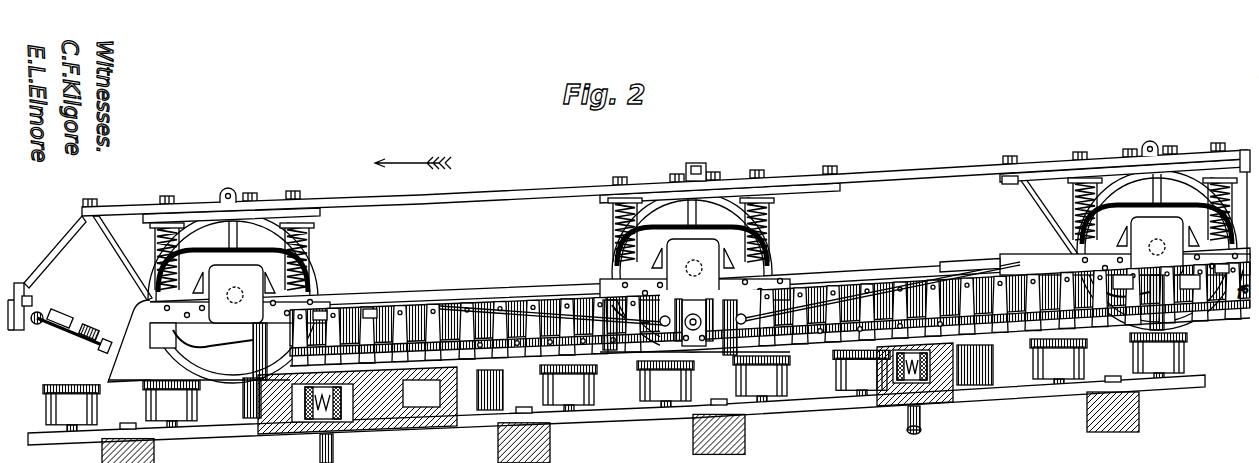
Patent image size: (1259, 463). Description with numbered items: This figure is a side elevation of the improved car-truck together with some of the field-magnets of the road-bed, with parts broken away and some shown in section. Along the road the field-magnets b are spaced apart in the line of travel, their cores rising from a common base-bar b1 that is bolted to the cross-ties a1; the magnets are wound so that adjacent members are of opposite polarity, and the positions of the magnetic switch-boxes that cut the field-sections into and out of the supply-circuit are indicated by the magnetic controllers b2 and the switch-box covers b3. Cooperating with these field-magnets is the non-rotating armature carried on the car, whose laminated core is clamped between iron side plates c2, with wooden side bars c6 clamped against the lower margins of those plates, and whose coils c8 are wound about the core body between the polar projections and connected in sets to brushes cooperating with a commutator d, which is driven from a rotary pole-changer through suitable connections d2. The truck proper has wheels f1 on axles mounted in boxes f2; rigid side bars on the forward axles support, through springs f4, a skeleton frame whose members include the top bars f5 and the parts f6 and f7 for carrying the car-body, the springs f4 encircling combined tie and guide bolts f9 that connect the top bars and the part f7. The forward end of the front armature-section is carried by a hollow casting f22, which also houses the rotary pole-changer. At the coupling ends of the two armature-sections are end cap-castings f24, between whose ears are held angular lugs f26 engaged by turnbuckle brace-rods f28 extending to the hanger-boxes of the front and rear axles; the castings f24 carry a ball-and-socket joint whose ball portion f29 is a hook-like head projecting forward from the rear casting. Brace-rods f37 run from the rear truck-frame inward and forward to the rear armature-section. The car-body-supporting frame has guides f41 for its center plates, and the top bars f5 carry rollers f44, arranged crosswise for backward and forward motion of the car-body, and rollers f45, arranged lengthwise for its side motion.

The ties a1 is at (185, 458).
The field-magnets b is at (145, 407).
The base-bar b1 is at (227, 436).
The magnetic controllers b2 is at (320, 388).
The switch-box covers b3 is at (940, 410).
The side plates c2 is at (370, 317).
The side bars c6 is at (533, 357).
The coils c8 is at (420, 317).
The commutator d is at (20, 337).
The connections d2 is at (77, 340).
The wheels f1 is at (265, 220).
The boxes f2 is at (696, 270).
The springs f4 is at (157, 240).
The top bars f5 is at (490, 178).
The skeleton frame part f6 is at (121, 261).
The skeleton frame part f7 is at (200, 337).
The combined tie and guide bolts f9 is at (167, 205).
The hollow casting f22 is at (133, 358).
The end cap-castings f24 is at (710, 340).
The angular lugs f26 is at (666, 327).
The turnbuckle brace-rods f28 is at (547, 307).
The ball portion f29 is at (697, 315).
The brace-rods f37 is at (963, 266).
The guides f41 is at (355, 196).
The rollers f44 is at (230, 190).
The rollers f45 is at (692, 163).